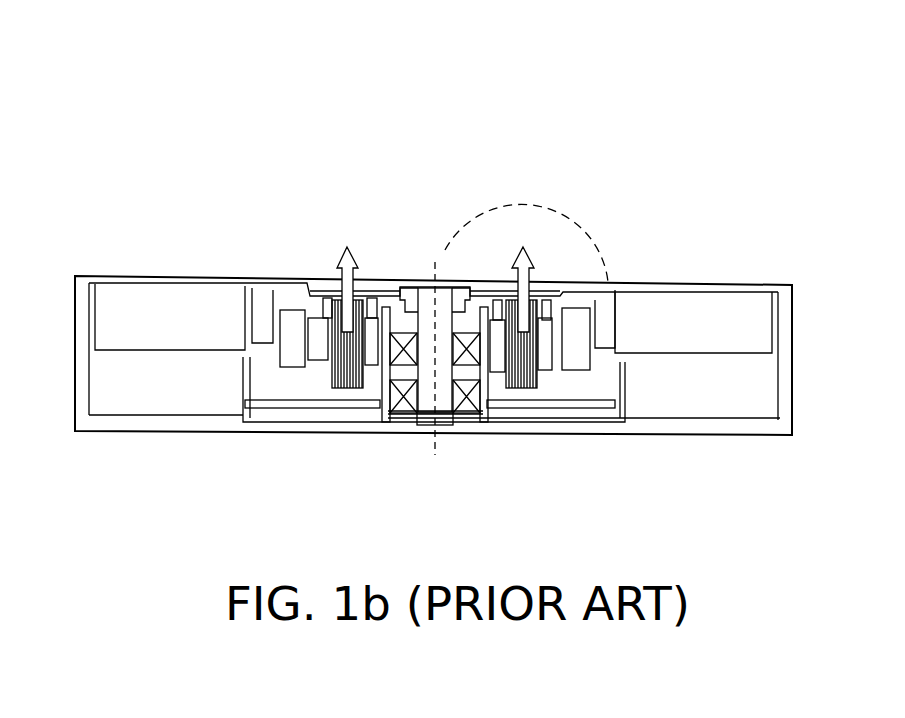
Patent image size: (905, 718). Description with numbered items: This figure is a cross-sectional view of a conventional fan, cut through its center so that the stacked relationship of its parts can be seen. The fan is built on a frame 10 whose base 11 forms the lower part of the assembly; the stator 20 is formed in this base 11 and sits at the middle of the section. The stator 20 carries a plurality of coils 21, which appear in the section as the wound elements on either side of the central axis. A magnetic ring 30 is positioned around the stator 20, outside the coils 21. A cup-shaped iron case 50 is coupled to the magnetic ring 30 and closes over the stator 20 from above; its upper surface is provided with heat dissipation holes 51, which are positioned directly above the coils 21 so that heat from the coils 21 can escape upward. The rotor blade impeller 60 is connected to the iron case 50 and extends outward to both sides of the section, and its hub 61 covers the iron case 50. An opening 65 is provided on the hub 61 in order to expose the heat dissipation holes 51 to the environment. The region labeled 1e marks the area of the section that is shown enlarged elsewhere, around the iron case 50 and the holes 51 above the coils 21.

The opening 65 is at (368, 143).
The frame 10 is at (783, 320).
The base 11 is at (490, 412).
The stator 20 is at (460, 430).
The coils 21 is at (350, 348).
The magnetic ring 30 is at (293, 348).
The iron case 50 is at (322, 288).
The heat dissipation holes 51 is at (360, 275).
The rotor blade impeller 60 is at (128, 317).
The hub 61 is at (248, 288).
The gap region 1e is at (530, 188).